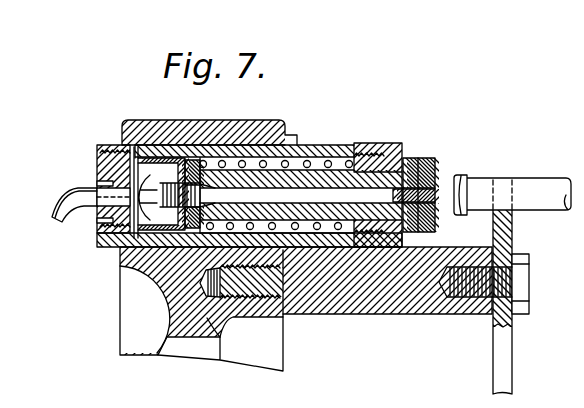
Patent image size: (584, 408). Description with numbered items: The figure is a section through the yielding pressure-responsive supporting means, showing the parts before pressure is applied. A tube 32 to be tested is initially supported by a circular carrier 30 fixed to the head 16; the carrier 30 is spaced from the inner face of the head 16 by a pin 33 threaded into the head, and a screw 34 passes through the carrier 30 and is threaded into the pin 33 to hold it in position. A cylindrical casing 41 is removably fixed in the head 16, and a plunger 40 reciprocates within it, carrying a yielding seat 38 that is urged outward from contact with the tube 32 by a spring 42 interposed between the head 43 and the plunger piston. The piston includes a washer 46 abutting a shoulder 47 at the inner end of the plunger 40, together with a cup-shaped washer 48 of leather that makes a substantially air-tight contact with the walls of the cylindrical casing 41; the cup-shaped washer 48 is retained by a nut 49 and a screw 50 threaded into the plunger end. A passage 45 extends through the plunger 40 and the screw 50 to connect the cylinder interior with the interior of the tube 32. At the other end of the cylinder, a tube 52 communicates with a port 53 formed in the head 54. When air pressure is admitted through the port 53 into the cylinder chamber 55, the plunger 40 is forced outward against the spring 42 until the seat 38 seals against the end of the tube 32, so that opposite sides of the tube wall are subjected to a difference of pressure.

The head 16 is at (284, 339).
The carrier 30 is at (502, 346).
The tube 32 is at (527, 187).
The pin 33 is at (420, 302).
The screw 34 is at (519, 281).
The seat 38 is at (436, 172).
The plunger 40 is at (317, 182).
The cylindrical casing 41 is at (310, 166).
The spring 42 is at (304, 162).
The head 43 is at (385, 150).
The passage 45 is at (327, 195).
The washer 46 is at (187, 160).
The shoulder 47 is at (200, 167).
The cup-shaped washer 48 is at (148, 146).
The nut 49 is at (95, 258).
The screw 50 is at (112, 182).
The tube 52 is at (80, 191).
The port 53 is at (112, 216).
The head 54 is at (100, 163).
The cylinder chamber 55 is at (140, 157).